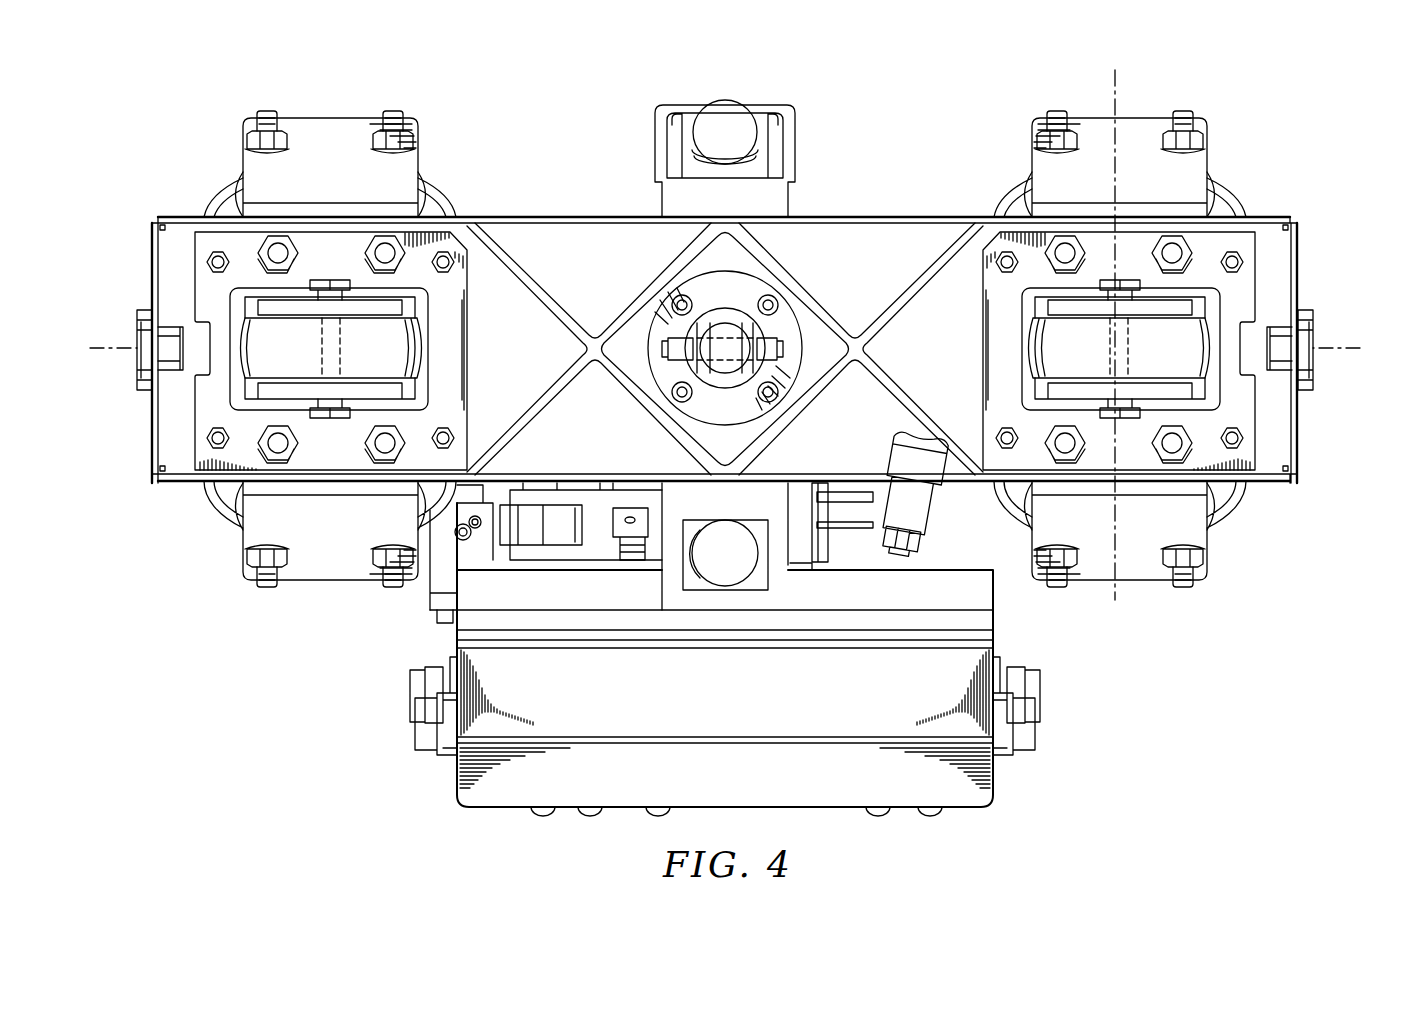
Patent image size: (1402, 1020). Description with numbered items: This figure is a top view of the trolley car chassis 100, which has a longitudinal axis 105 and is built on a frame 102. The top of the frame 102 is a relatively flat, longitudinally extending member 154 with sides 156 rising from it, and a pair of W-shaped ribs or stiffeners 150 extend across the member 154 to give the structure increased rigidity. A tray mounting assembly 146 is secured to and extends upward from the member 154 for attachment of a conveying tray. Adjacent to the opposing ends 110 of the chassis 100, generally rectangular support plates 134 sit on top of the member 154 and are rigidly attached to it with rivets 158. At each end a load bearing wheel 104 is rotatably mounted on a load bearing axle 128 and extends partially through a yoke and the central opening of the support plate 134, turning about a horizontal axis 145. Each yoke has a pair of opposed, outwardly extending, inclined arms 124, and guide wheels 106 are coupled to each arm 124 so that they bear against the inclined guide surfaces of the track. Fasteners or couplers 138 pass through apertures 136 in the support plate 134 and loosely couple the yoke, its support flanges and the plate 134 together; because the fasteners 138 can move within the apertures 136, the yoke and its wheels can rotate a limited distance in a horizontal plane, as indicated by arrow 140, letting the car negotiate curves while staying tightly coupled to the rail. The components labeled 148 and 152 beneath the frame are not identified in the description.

The trolley car chassis 100 is at (197, 110).
The frame 102 is at (1268, 219).
The load bearing wheel 104 is at (725, 349).
The longitudinal axis 105 is at (1330, 333).
The guide wheel 106 is at (423, 152).
The opposing ends 110 is at (150, 240).
The inclined arms 124 is at (310, 117).
The load bearing axle 128 is at (318, 342).
The support plate 134 is at (460, 385).
The apertures 136 is at (368, 248).
The fasteners 138 is at (378, 258).
The arrow 140 is at (121, 198).
The horizontal axis 145 is at (1112, 92).
The tray mounting assembly 146 is at (793, 320).
The motor gearbox 148 is at (817, 805).
The "W" shaped ribs 150 is at (537, 286).
The sensor 152 is at (933, 517).
The longitudinally extending member 154 is at (725, 349).
The sides 156 is at (548, 216).
The rivets 158 is at (1235, 447).